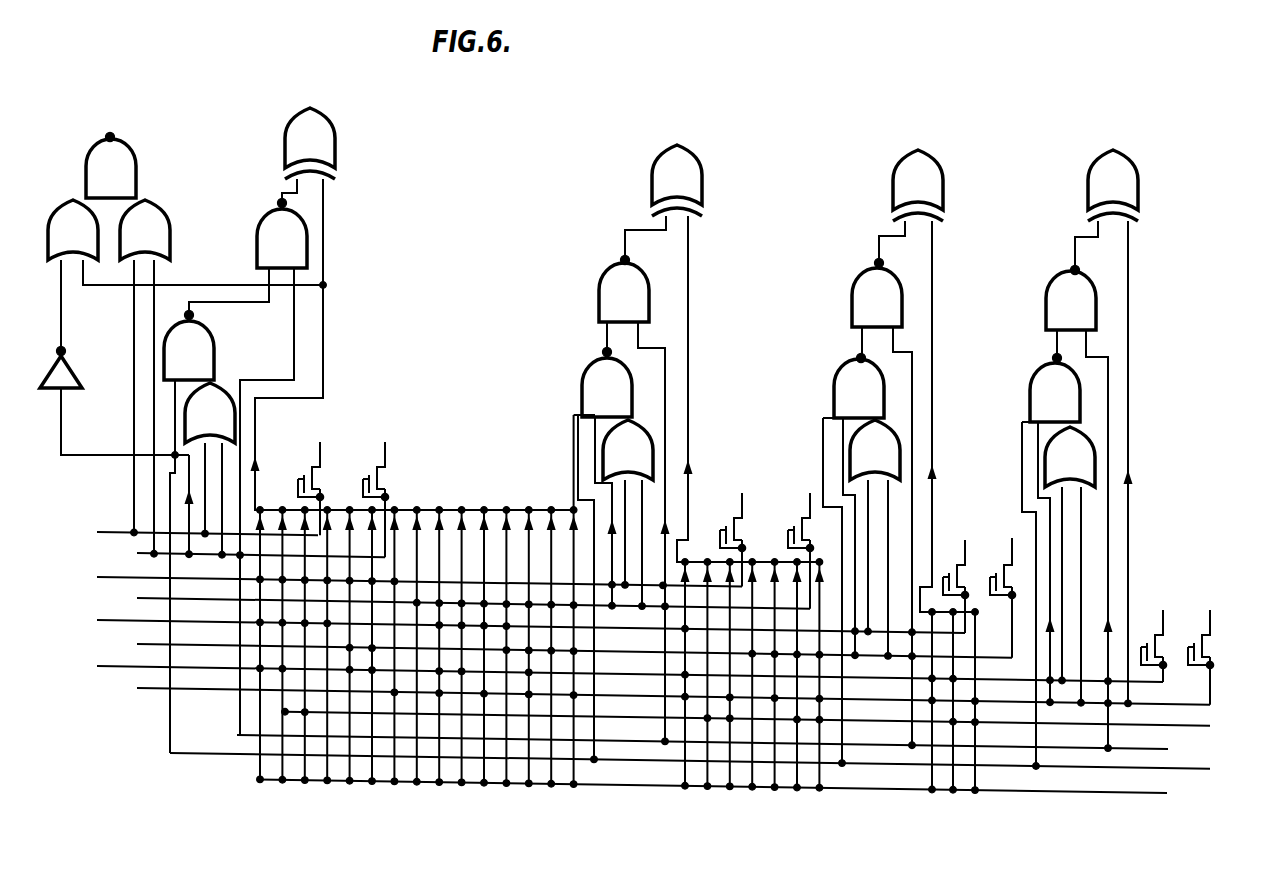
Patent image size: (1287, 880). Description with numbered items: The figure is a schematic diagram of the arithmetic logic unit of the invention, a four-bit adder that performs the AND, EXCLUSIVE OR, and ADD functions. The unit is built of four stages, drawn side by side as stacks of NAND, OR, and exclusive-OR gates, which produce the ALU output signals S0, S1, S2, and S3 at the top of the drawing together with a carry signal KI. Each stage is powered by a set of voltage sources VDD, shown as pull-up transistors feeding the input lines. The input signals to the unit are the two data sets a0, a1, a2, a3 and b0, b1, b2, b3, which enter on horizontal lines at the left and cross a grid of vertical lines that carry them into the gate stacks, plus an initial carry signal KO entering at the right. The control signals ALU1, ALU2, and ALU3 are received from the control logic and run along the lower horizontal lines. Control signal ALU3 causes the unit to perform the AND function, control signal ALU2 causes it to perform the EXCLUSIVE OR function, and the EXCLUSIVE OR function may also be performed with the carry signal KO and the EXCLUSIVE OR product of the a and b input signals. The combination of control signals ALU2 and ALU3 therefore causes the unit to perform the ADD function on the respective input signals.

The carry signal KI is at (110, 133).
The ALU output signal S3 is at (310, 108).
The ALU output signal S2 is at (677, 142).
The ALU output signal S1 is at (918, 150).
The ALU output signal S0 is at (1114, 150).
The voltage source VDD is at (762, 543).
The input signal b3 is at (192, 531).
The input signal a3 is at (246, 553).
The input signal b2 is at (404, 576).
The input signal a2 is at (458, 598).
The input signal b1 is at (516, 620).
The input signal a1 is at (559, 644).
The input signal b0 is at (615, 667).
The input signal a0 is at (656, 690).
The initial carry signal KO is at (759, 727).
The control signal ALU3 is at (724, 750).
The control signal ALU2 is at (716, 772).
The control signal ALU1 is at (735, 795).